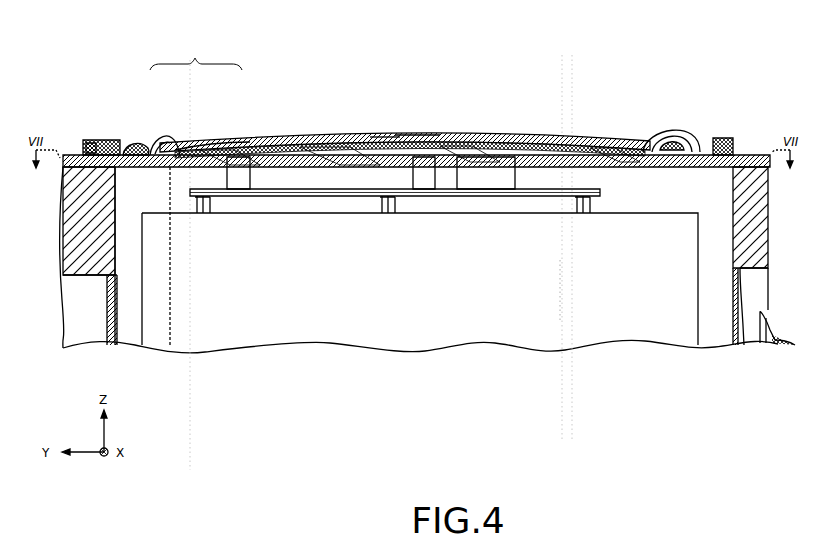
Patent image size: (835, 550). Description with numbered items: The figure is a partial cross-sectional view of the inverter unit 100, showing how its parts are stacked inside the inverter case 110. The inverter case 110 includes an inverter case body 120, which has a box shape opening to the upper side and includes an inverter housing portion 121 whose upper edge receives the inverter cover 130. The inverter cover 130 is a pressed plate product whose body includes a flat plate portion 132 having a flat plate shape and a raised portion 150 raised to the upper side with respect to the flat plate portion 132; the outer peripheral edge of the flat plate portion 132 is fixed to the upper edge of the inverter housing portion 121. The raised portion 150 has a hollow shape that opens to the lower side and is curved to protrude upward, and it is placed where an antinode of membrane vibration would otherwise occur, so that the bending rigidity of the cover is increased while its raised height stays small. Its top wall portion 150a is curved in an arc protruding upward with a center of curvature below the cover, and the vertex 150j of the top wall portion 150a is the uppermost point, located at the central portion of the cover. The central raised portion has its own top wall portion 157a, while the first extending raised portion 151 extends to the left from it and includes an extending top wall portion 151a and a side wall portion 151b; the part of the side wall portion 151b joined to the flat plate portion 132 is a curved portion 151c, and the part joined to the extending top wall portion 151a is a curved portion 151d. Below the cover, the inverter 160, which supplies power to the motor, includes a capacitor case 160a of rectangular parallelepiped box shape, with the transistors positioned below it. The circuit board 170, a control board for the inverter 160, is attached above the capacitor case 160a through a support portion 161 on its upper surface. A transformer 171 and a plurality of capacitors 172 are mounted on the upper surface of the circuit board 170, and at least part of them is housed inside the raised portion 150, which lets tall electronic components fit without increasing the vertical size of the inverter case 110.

The inverter unit 100 is at (750, 115).
The inverter case 110 is at (771, 280).
The inverter case body 120 is at (733, 348).
The inverter housing portion 121 is at (763, 205).
The inverter cover 130 is at (90, 146).
The flat plate portion 132 is at (113, 150).
The raised portion 150 is at (489, 122).
The top wall portion 150a is at (552, 135).
The vertex 150j is at (418, 136).
The first extending raised portion 151 is at (196, 54).
The extending top wall portion 151a is at (200, 142).
The side wall portion 151b is at (160, 148).
The curved portion 151c is at (138, 148).
The curved portion 151d is at (160, 350).
The top wall portion 157a is at (400, 138).
The inverter 160 is at (702, 312).
The capacitor case 160a is at (565, 322).
The support portion 161 is at (212, 198).
The circuit board 170 is at (525, 198).
The transformer 171 is at (487, 192).
The capacitors 172 is at (255, 190).